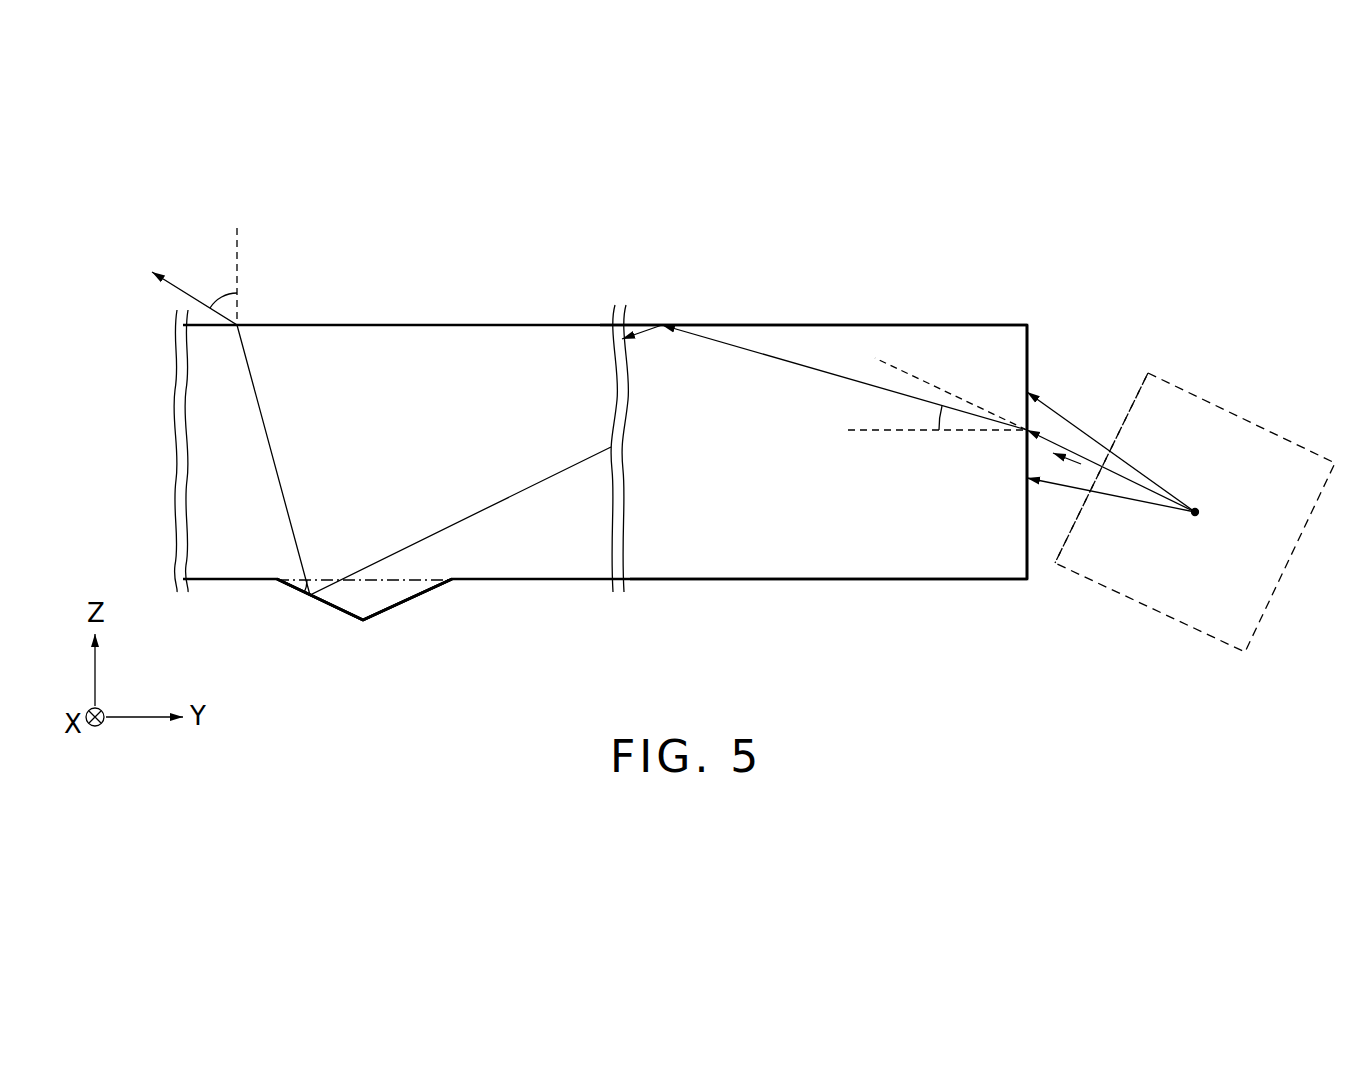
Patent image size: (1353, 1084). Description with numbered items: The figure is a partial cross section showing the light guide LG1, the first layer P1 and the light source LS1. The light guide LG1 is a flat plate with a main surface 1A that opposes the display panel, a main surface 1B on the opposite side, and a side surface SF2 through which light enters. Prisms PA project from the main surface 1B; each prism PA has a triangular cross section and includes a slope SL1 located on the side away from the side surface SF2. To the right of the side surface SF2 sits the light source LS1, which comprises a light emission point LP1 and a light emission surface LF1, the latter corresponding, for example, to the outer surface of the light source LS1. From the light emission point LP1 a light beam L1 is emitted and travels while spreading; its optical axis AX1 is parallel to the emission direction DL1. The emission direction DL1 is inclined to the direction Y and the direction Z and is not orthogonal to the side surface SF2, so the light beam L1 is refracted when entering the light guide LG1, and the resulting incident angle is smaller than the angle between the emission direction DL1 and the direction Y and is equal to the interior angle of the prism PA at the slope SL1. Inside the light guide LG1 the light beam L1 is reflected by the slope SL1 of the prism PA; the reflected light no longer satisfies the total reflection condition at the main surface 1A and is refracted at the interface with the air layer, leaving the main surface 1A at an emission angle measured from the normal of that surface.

The light guide LG1 is at (818, 563).
The main surface 1A is at (780, 320).
The main surface 1B is at (746, 583).
The side surface SF2 is at (1032, 346).
The first layer P1 is at (476, 594).
The slope SL1 is at (343, 617).
The prism PA is at (426, 601).
The light beam L1 is at (589, 433).
The optical axis AX1 is at (1058, 446).
The emission direction DL1 is at (1064, 464).
The light emission point LP1 is at (1198, 508).
The light source LS1 is at (1230, 411).
The light emission surface LF1 is at (1128, 400).